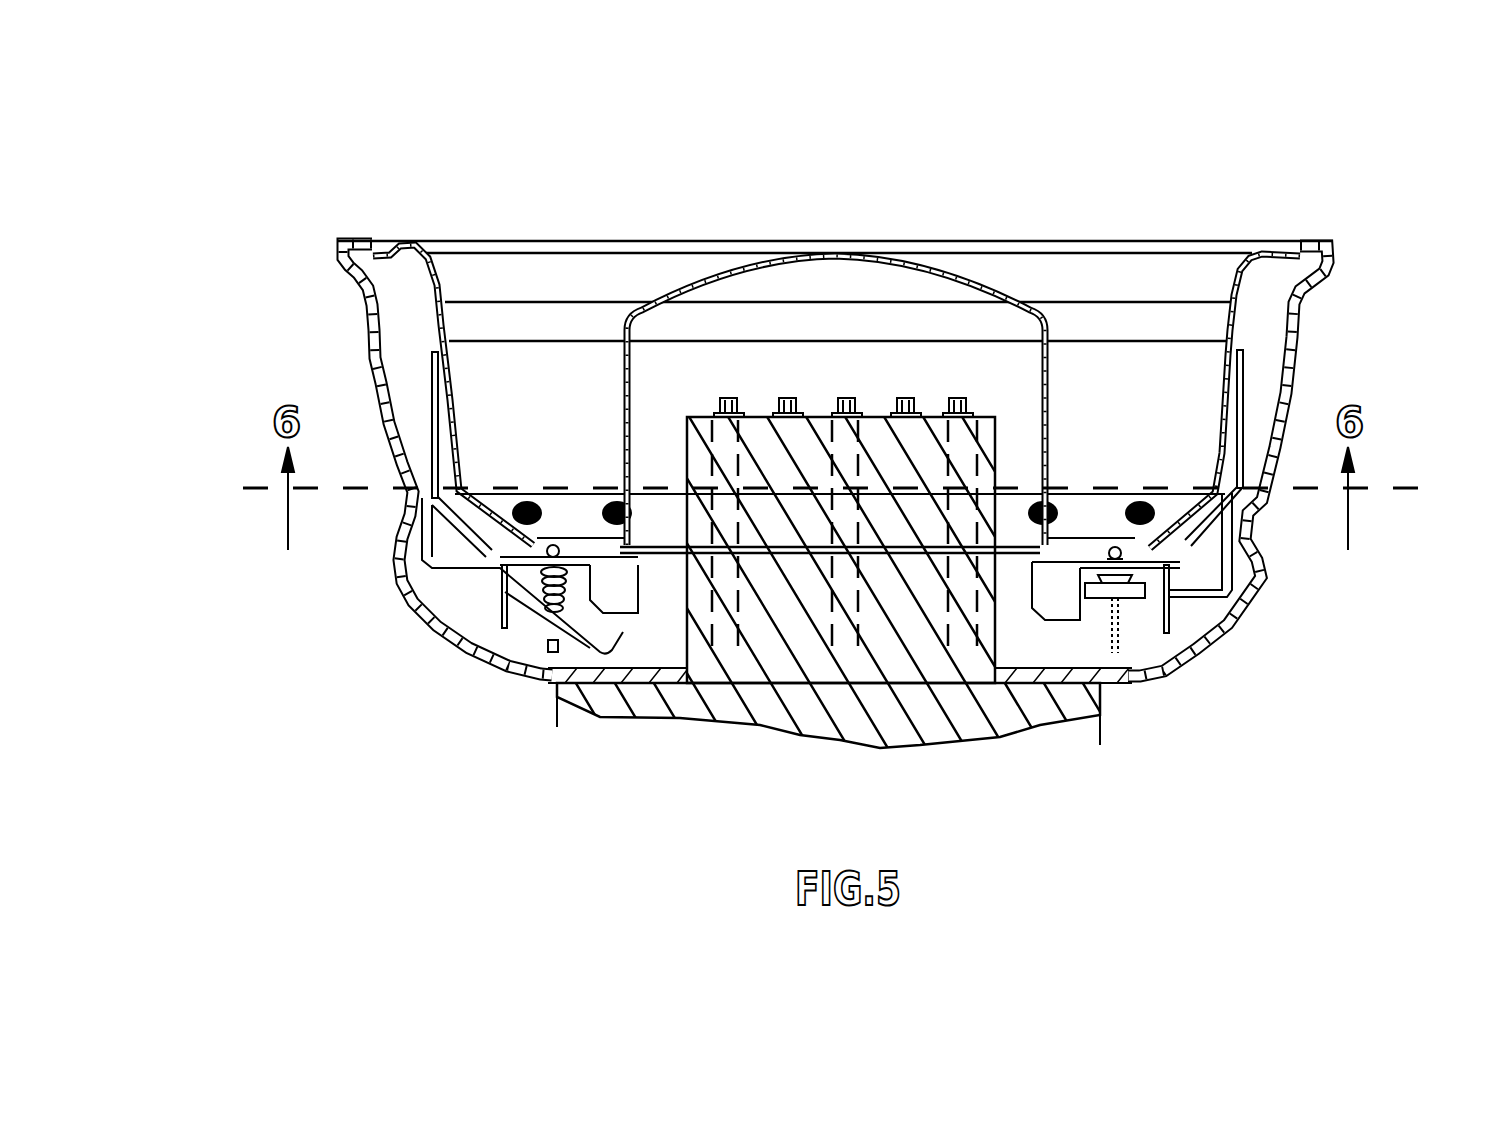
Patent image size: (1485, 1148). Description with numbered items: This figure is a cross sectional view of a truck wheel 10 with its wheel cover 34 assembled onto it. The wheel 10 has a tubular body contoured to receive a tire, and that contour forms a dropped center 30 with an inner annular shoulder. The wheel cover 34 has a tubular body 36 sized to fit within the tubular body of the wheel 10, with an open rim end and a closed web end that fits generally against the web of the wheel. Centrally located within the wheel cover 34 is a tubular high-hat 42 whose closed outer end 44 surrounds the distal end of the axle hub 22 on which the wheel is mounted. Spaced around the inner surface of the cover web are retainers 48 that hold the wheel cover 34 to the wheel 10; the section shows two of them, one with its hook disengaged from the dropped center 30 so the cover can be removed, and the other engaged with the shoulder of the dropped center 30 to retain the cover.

The truck wheel 10 is at (413, 618).
The hub 22 is at (687, 462).
The dropped center 30 is at (1270, 515).
The wheel cover 34 is at (1250, 322).
The tubular body 36 is at (1227, 450).
The tubular high-hat 42 is at (622, 370).
The closed outer end 44 is at (973, 287).
The retainers 48 is at (533, 633).